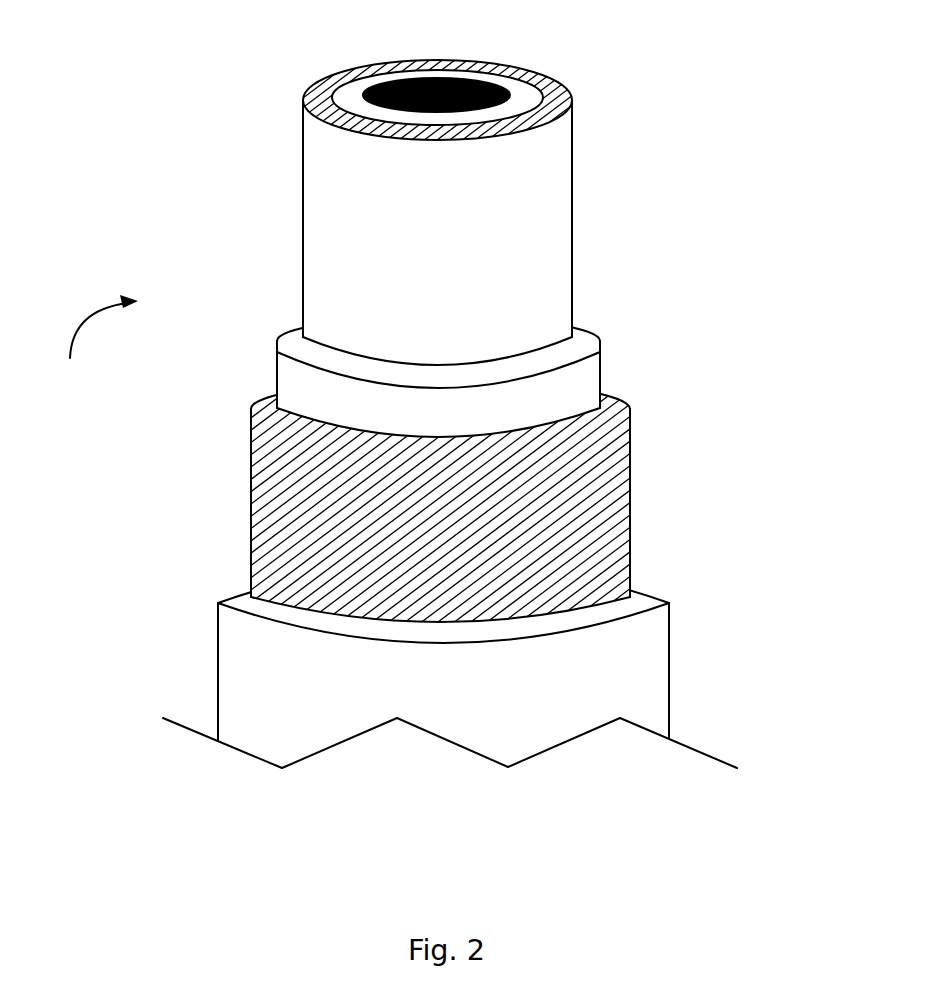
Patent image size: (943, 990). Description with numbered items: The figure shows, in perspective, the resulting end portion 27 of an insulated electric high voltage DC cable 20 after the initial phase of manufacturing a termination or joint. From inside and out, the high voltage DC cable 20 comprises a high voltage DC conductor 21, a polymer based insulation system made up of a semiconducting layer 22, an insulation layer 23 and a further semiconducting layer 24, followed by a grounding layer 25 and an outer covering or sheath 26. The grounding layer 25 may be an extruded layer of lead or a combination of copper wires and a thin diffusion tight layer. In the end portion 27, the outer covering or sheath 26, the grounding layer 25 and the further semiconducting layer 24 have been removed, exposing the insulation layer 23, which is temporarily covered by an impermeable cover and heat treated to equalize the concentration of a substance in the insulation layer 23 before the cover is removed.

The high voltage DC cable 20 is at (134, 509).
The high voltage DC conductor 21 is at (458, 80).
The semiconducting layer 22 is at (528, 97).
The insulation layer 23 is at (571, 100).
The further semiconducting layer 24 is at (600, 376).
The grounding layer 25 is at (630, 484).
The outer covering or sheath 26 is at (669, 640).
The end portion 27 is at (96, 344).